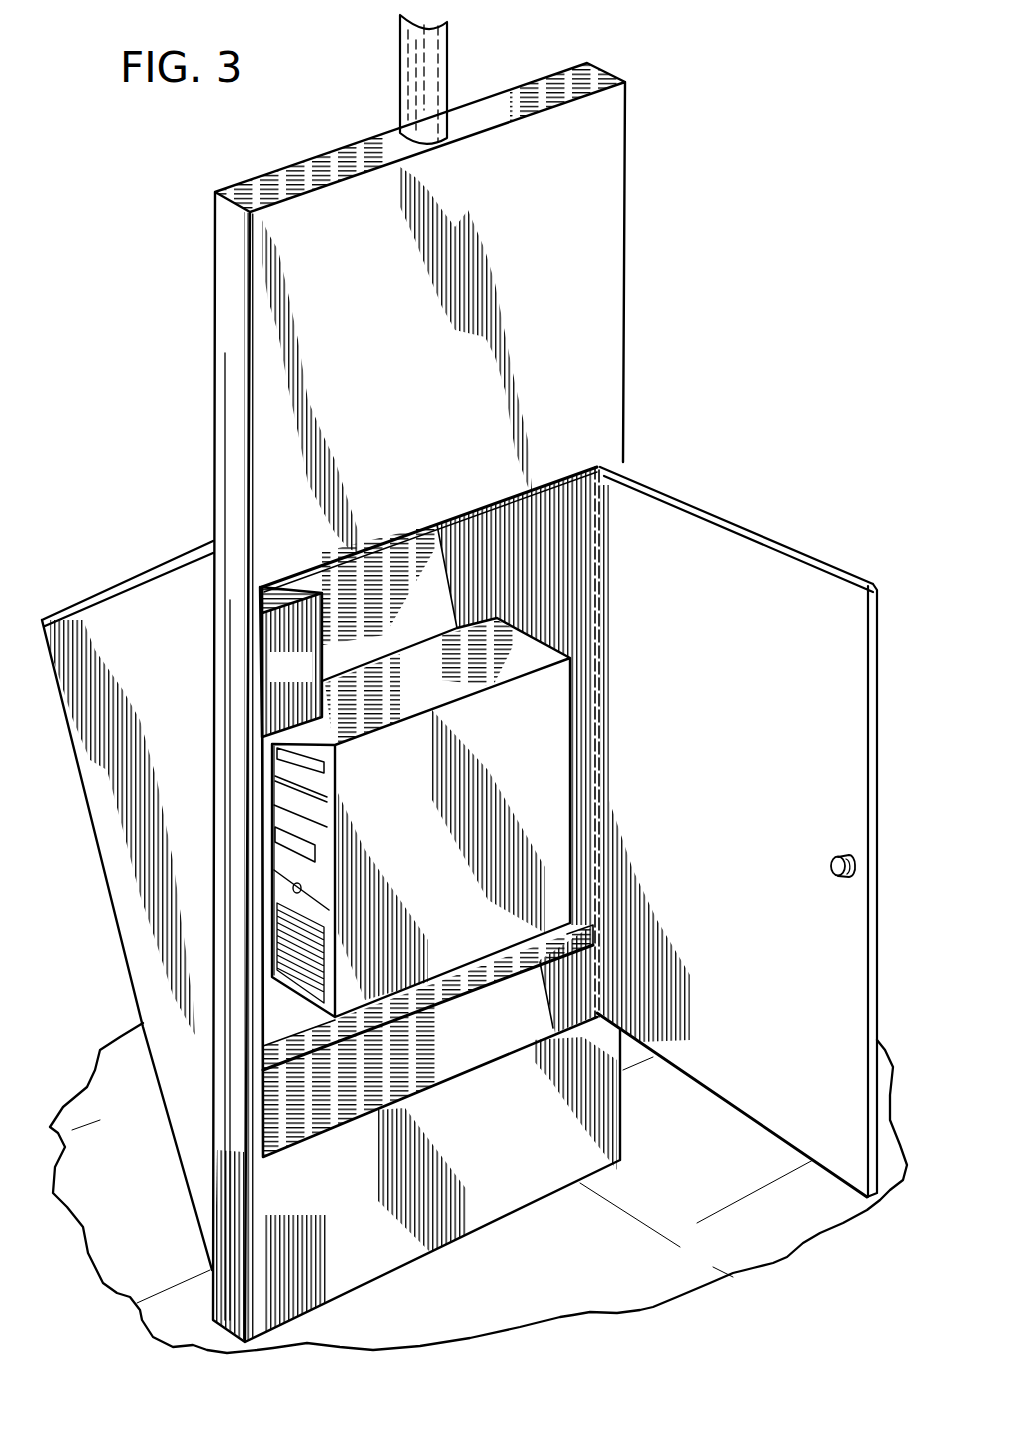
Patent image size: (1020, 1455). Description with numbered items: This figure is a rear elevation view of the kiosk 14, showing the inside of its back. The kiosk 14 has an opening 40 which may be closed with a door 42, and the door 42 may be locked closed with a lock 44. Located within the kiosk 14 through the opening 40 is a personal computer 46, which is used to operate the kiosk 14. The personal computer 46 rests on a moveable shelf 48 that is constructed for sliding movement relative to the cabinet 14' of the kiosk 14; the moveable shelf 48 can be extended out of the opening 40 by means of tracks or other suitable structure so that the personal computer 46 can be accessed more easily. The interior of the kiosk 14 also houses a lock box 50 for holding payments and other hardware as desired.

The kiosk 14 is at (127, 850).
The cabinet 14' is at (464, 678).
The opening 40 is at (622, 460).
The door 42 is at (727, 560).
The lock 44 is at (832, 870).
The personal computer 46 is at (412, 832).
The moveable shelf 48 is at (293, 1018).
The lock box 50 is at (302, 681).